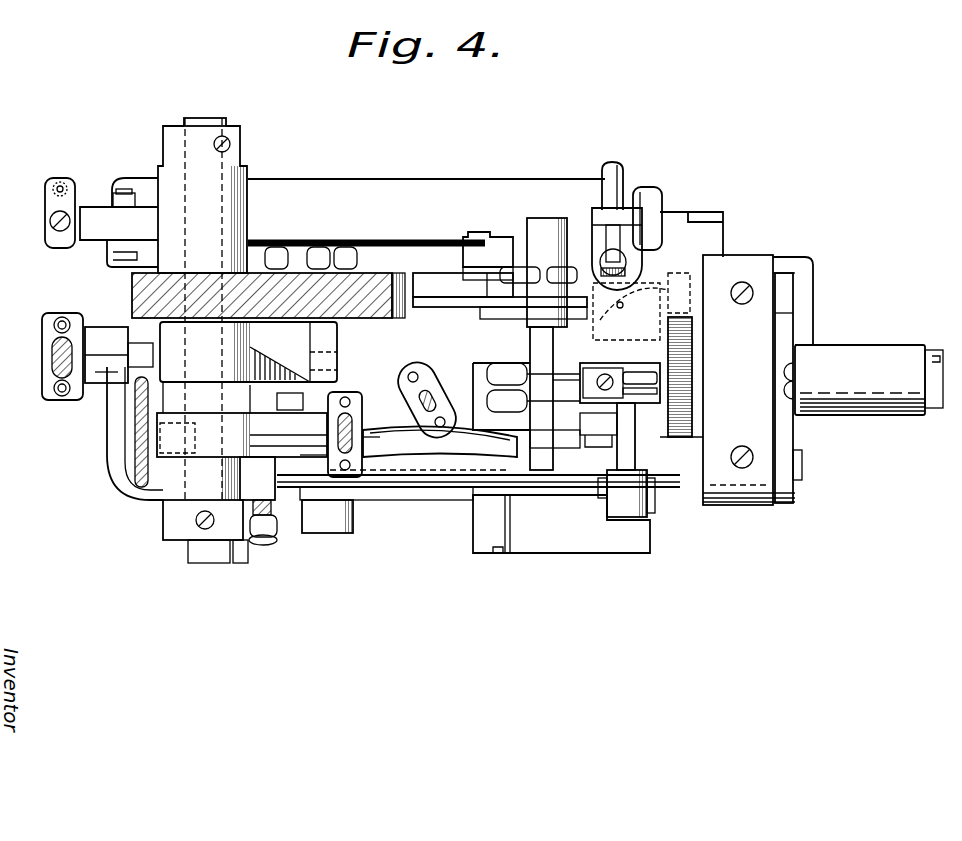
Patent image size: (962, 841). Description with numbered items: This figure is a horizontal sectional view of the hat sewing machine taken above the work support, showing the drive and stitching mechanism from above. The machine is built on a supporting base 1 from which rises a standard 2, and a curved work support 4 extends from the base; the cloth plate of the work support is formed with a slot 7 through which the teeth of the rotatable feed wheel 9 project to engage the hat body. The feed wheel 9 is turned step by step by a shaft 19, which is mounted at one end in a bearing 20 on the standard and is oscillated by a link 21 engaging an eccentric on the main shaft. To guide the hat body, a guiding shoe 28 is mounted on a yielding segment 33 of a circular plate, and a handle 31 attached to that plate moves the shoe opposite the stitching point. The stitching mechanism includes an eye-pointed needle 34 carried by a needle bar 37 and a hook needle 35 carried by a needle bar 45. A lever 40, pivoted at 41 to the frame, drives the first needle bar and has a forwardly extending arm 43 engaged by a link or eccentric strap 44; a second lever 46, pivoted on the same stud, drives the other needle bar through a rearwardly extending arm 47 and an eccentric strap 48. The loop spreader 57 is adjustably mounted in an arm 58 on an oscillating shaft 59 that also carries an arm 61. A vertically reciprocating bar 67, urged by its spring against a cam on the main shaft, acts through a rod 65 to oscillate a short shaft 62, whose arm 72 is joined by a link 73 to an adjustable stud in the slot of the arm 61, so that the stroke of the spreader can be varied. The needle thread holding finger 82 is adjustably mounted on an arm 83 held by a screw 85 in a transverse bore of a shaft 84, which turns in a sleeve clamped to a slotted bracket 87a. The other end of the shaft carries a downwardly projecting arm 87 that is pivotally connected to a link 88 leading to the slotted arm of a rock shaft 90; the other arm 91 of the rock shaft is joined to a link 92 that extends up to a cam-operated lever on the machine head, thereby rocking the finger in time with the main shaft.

The supporting base 1 is at (327, 190).
The standard 2 is at (150, 298).
The work support 4 is at (758, 380).
The slot 7 is at (692, 389).
The feed wheel 9 is at (680, 412).
The shaft 19 is at (383, 473).
The bearing 20 is at (248, 478).
The link 21 is at (270, 520).
The guiding shoe 28 is at (643, 207).
The handle 31 is at (617, 173).
The yielding segment 33 is at (592, 211).
The eye-pointed needle 34 is at (639, 436).
The hook needle 35 is at (657, 383).
The needle bar 37 is at (513, 398).
The lever 40 is at (417, 448).
The pivot 41 is at (187, 545).
The forwardly extending arm 43 is at (327, 435).
The link or eccentric strap 44 is at (353, 413).
The needle bar 45 is at (443, 357).
The lever 46 is at (248, 367).
The rearwardly extending arm 47 is at (137, 383).
The link or eccentric strap 48 is at (44, 357).
The loop spreader 57 is at (697, 360).
The arm 58 is at (652, 303).
The shaft 59 is at (618, 438).
The arm 61 is at (617, 498).
The short shaft 62 is at (333, 533).
The rod 65 is at (413, 373).
The vertically reciprocating bar 67 is at (381, 427).
The arm 72 is at (450, 487).
The link 73 is at (560, 530).
The finger 82 is at (593, 376).
The arm 83 is at (593, 383).
The shaft 84 is at (547, 344).
The screw 85 is at (540, 433).
The arm 87 is at (517, 257).
The slotted bracket 87a is at (413, 282).
The link 88 is at (392, 243).
The rock shaft 90 is at (207, 190).
The arm 91 is at (95, 223).
The link 92 is at (52, 224).